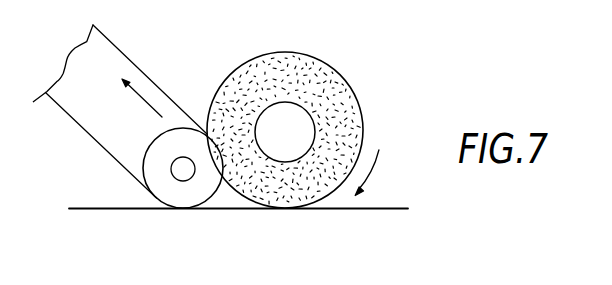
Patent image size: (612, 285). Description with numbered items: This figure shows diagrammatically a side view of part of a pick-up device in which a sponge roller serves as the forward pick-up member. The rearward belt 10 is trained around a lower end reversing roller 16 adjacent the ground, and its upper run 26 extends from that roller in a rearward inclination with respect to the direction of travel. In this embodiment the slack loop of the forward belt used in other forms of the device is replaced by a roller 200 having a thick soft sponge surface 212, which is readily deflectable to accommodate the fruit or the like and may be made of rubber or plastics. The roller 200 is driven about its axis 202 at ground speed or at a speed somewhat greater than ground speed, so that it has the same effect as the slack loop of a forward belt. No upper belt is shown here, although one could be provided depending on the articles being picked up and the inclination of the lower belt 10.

The rearward belt 10 is at (128, 103).
The upper run 26 is at (128, 58).
The lower end reversing roller 16 is at (178, 211).
The roller 200 is at (313, 108).
The axis 202 is at (285, 130).
The soft sponge surface 212 is at (338, 135).